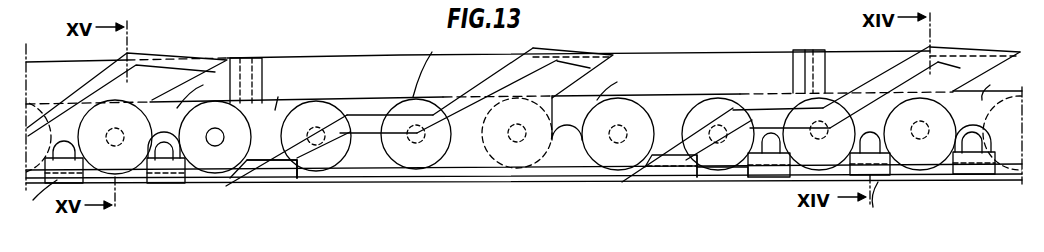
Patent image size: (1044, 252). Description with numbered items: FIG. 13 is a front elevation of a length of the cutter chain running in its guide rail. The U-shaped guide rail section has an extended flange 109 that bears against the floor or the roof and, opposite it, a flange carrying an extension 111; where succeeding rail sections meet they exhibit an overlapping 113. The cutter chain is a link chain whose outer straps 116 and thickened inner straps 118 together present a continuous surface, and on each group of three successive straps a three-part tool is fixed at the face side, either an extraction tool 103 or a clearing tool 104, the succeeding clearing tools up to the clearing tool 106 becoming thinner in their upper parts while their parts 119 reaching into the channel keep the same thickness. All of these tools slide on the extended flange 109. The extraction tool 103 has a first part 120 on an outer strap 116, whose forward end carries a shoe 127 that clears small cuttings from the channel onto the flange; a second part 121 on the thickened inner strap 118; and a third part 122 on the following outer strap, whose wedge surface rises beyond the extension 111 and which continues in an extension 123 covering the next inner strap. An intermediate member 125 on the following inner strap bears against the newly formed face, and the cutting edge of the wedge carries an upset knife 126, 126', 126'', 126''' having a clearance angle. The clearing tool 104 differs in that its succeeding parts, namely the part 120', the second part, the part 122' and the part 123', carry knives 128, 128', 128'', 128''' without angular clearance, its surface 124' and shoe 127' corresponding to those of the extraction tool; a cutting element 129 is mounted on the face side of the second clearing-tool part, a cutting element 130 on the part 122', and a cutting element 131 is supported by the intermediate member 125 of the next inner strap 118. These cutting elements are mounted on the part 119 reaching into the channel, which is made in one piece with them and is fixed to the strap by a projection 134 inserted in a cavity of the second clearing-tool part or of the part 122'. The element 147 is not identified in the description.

The extraction tool 103 is at (568, 118).
The clearing tool 104 is at (938, 62).
The clearing tool 106 is at (139, 70).
The extended flange 109 is at (133, 190).
The extension 111 is at (342, 67).
The overlapping 113 is at (243, 58).
The outer strap 116 is at (355, 74).
The inner strap 118 is at (598, 88).
The part 119 is at (49, 0).
The first part 120 is at (306, 105).
The part 120' is at (711, 188).
The second part 121 is at (367, 163).
The third part 122 is at (378, 155).
The part 122' is at (920, 152).
The extension 123 is at (592, 49).
The part 123' is at (980, 71).
The rail segment 124' is at (721, 186).
The intermediate member 125 is at (575, 157).
The upset knife 126 is at (288, 95).
The upset knife 126' is at (386, 69).
The upset knife 126'' is at (487, 90).
The upset knife 126''' is at (577, 43).
The shoe 127 is at (463, 108).
The wedge 127' is at (651, 182).
The knife 128 is at (687, 91).
The knife 128' is at (781, 102).
The knife 128'' is at (975, 34).
The knife 128''' is at (880, 87).
The cutting element 129 is at (763, 177).
The cutting element 130 is at (452, 115).
The cutting element 131 is at (155, 184).
The projection 134 is at (190, 126).
The roller hub 147 is at (118, 128).